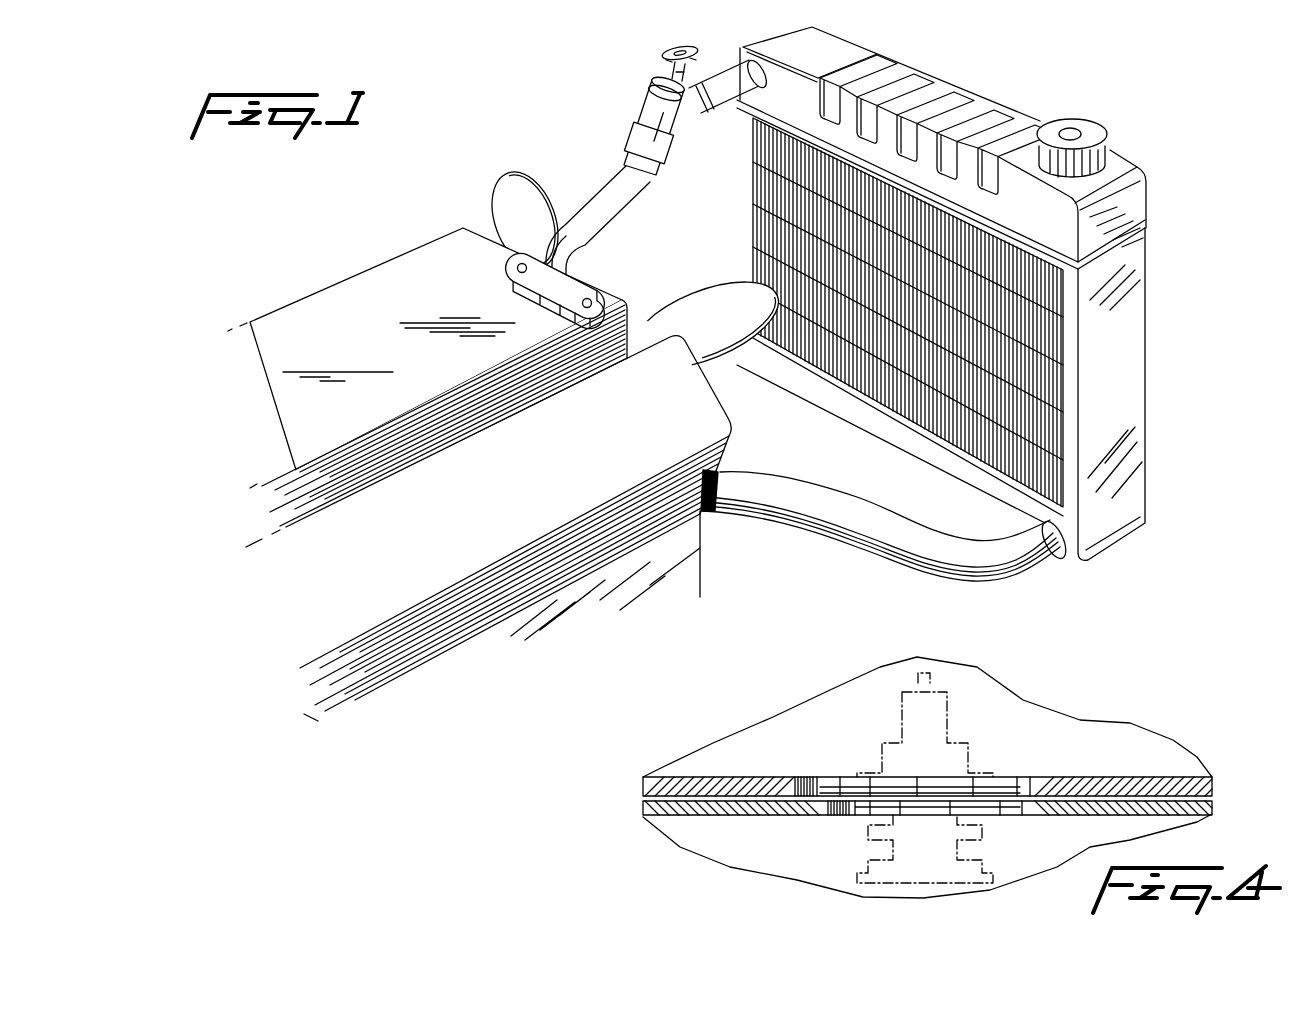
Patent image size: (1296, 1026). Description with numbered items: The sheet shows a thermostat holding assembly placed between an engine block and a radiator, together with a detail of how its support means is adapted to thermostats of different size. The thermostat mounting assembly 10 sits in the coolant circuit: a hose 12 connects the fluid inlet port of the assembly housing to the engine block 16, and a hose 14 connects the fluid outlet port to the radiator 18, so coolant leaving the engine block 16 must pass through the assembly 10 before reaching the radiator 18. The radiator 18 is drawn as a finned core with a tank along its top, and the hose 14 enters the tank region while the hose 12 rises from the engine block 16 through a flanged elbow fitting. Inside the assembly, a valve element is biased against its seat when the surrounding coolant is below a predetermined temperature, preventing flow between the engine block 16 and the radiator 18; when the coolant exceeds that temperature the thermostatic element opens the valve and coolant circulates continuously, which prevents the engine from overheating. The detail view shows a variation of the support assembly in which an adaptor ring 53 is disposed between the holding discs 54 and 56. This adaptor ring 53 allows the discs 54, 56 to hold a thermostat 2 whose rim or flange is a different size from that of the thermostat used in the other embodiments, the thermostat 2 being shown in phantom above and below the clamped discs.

In FIG. 1, the thermostat mounting assembly 10 is at (628, 102).
In FIG. 1, the hose 12 is at (600, 228).
In FIG. 1, the hose 14 is at (717, 117).
In FIG. 1, the engine block 16 is at (446, 568).
In FIG. 1, the radiator 18 is at (933, 87).
In FIG. 4, the thermostat 2 is at (963, 733).
In FIG. 4, the adaptor ring 53 is at (813, 780).
In FIG. 4, the holding disc 54 is at (712, 787).
In FIG. 4, the holding disc 56 is at (733, 810).